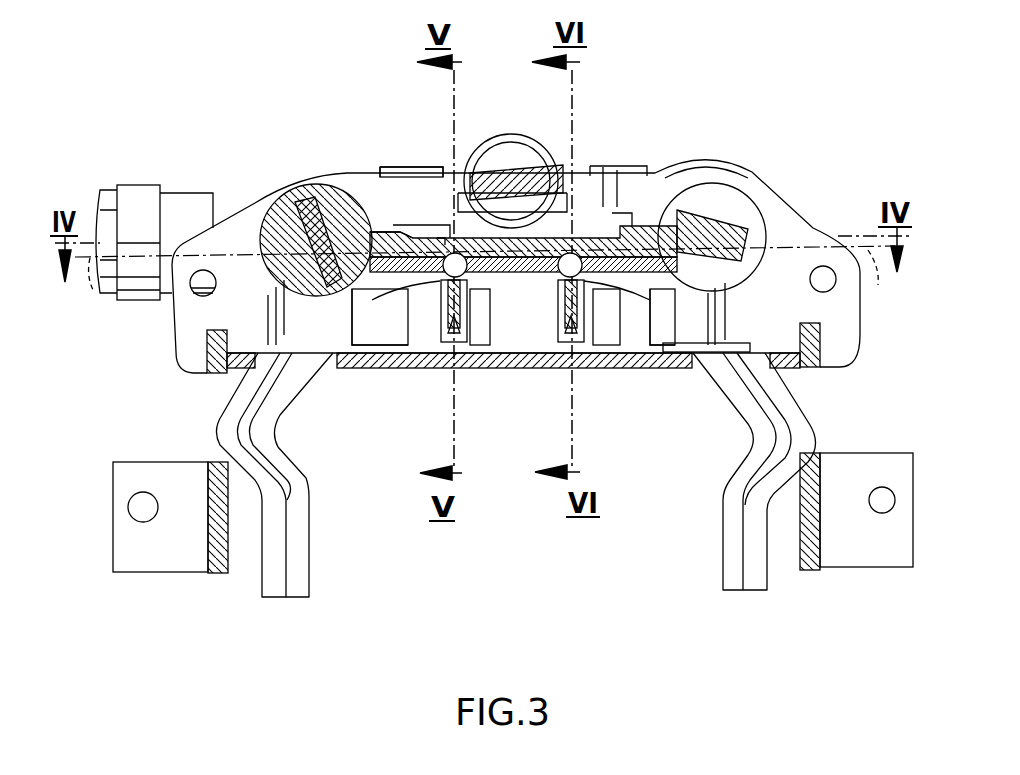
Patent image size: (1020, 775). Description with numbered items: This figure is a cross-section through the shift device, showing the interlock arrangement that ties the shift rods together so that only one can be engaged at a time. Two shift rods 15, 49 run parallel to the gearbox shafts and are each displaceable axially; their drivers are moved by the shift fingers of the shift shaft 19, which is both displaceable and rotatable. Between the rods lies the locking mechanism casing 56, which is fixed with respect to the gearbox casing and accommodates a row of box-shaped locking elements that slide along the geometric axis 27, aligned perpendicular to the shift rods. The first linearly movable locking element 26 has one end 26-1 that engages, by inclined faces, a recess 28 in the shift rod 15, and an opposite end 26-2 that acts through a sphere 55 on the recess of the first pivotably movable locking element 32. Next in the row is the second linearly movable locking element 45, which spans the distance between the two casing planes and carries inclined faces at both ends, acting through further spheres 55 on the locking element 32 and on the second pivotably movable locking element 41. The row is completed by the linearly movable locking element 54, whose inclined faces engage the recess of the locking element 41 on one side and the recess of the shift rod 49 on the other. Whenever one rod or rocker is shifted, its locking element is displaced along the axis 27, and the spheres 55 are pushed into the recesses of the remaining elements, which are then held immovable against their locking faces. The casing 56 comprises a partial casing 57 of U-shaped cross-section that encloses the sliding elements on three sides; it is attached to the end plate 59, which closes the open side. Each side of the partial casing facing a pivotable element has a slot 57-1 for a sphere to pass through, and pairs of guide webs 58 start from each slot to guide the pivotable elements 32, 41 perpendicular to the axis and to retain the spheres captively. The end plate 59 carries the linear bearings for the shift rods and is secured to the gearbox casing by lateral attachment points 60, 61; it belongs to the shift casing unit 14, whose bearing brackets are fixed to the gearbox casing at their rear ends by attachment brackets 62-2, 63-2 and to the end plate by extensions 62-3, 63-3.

The shift casing unit 14 is at (845, 368).
The shift rod 15 is at (280, 188).
The shift shaft 19 is at (526, 158).
The linearly movable locking element 26 is at (442, 278).
The end of the linearly movable locking element 26-1 is at (395, 232).
The end of the linearly movable locking element 26-2 is at (420, 224).
The geometric axis 27 is at (488, 252).
The recess 28 is at (360, 177).
The pivotably movable locking element 32 is at (452, 333).
The second pivotably movable locking element 41 is at (578, 340).
The second linearly movable locking element 45 is at (574, 238).
The shift rod 49 is at (730, 216).
The linearly movable locking element 54 is at (655, 272).
The sphere 55 is at (443, 240).
The locking mechanism casing 56 is at (639, 216).
The partial casing 57 is at (403, 268).
The slot 57-1 is at (440, 288).
The guide web 58 is at (447, 345).
The end plate 59 is at (333, 168).
The lateral attachment point 60 is at (205, 276).
The lateral attachment point 61 is at (816, 268).
The attachment bracket 62-2 is at (143, 510).
The extension 62-3 is at (182, 358).
The attachment bracket 63-2 is at (880, 503).
The extension 63-3 is at (840, 353).